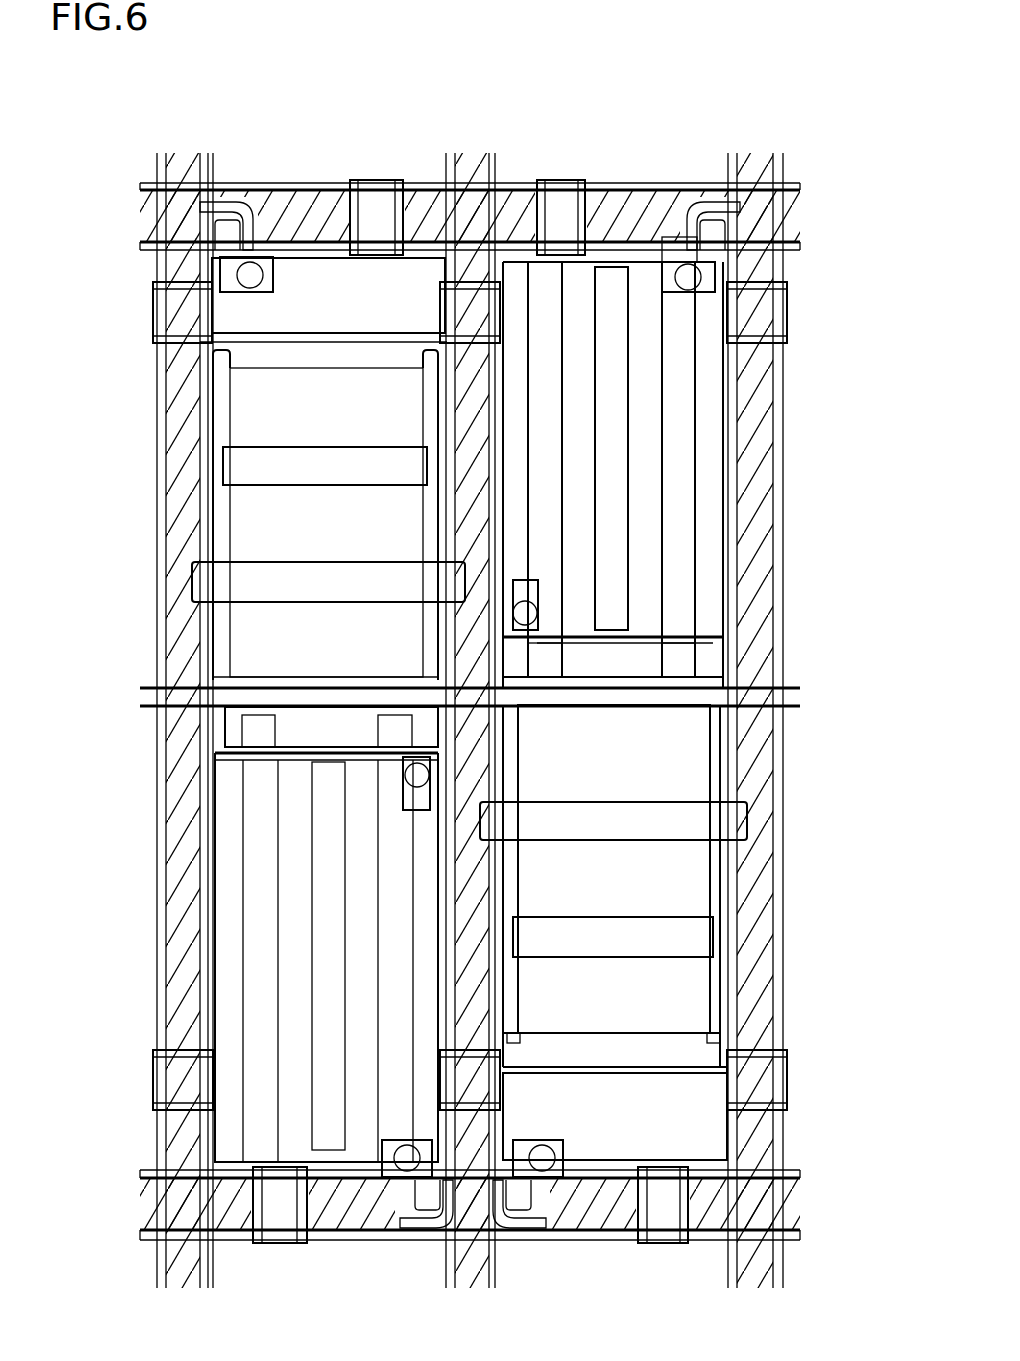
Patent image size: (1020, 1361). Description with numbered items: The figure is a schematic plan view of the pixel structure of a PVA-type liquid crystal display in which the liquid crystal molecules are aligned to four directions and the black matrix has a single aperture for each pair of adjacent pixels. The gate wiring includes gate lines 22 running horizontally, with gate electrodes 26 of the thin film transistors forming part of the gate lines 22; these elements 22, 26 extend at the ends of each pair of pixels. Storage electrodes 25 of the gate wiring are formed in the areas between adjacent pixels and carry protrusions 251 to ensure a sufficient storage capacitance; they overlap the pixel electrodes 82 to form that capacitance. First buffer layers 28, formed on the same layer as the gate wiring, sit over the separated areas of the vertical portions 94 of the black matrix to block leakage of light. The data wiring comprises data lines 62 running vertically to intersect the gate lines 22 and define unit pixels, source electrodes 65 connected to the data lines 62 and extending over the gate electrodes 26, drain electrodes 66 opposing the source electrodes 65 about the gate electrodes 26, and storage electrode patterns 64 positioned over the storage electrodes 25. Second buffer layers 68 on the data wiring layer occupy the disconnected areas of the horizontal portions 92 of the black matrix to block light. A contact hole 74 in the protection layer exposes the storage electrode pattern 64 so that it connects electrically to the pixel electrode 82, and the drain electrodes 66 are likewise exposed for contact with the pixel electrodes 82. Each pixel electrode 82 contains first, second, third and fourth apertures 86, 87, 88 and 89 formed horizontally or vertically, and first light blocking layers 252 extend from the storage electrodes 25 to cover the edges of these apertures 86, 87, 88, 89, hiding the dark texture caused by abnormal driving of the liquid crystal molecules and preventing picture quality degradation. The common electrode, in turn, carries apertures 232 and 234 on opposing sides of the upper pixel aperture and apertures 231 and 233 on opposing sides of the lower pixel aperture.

The gate line 22 is at (460, 170).
The storage electrode 25 is at (293, 693).
The gate electrode 26 is at (410, 185).
The first buffer layer 28 is at (790, 1078).
The data line 62 is at (175, 915).
The storage electrode pattern 64 is at (368, 712).
The source electrode 65 is at (232, 215).
The drain electrode 66 is at (268, 282).
The second buffer layer 68 is at (375, 250).
The contact hole 74 is at (410, 775).
The pixel electrode 82 is at (722, 770).
The first aperture 86 is at (617, 272).
The second aperture 87 is at (235, 468).
The third aperture 88 is at (307, 1240).
The fourth aperture 89 is at (735, 935).
The horizontal portion of black matrix 92 is at (300, 193).
The vertical portion of black matrix 94 is at (175, 392).
The sixth aperture 231 is at (735, 815).
The fourth aperture of common electrode 232 is at (233, 342).
The seventh aperture 233 is at (728, 1052).
The fifth aperture 234 is at (240, 585).
The protrusion 251 is at (283, 740).
The first light blocking layer 252 is at (227, 400).